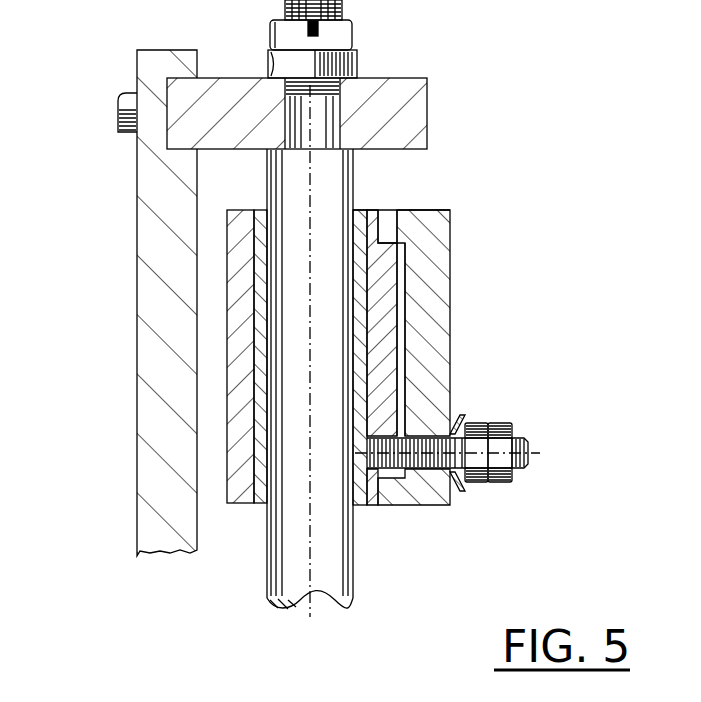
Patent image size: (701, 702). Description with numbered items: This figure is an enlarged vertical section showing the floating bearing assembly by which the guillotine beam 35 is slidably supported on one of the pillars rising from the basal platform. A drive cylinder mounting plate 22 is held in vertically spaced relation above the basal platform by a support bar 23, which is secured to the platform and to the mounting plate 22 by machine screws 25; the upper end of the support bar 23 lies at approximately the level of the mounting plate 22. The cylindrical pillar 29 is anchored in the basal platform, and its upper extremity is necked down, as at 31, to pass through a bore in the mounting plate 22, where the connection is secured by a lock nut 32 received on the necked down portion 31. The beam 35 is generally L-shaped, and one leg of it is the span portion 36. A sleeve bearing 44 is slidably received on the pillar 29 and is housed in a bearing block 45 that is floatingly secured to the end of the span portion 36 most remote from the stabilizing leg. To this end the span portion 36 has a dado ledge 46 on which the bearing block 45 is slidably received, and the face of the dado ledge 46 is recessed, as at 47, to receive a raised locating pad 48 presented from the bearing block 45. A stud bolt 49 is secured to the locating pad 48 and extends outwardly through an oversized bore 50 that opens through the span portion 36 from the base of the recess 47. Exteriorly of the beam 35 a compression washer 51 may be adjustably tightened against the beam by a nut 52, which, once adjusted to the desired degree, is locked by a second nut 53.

The drive cylinder mounting plate 22 is at (410, 125).
The support bar 23 is at (146, 288).
The machine screw 25 is at (127, 101).
The pillar 29 is at (330, 567).
The necked down portion 31 is at (338, 110).
The lock nut 32 is at (338, 40).
The beam 35 is at (460, 225).
The span portion 36 is at (436, 280).
The sleeve bearing 44 is at (262, 360).
The bearing block 45 is at (233, 445).
The dado ledge 46 is at (380, 222).
The recess 47 is at (390, 343).
The locating pad 48 is at (399, 302).
The stud bolt 49 is at (528, 456).
The oversized bore 50 is at (437, 462).
The compression washer 51 is at (456, 478).
The nut 52 is at (475, 428).
The second nut 53 is at (503, 428).